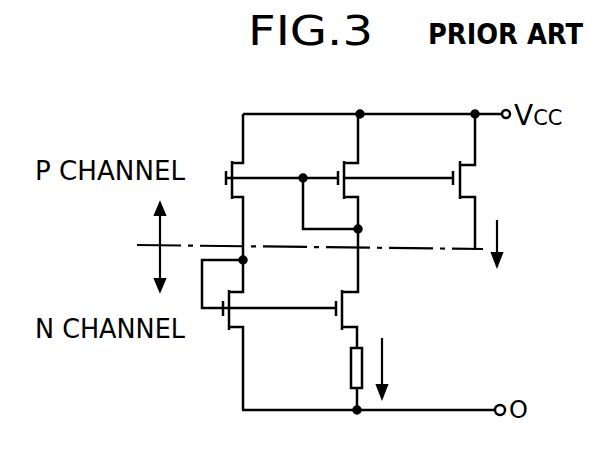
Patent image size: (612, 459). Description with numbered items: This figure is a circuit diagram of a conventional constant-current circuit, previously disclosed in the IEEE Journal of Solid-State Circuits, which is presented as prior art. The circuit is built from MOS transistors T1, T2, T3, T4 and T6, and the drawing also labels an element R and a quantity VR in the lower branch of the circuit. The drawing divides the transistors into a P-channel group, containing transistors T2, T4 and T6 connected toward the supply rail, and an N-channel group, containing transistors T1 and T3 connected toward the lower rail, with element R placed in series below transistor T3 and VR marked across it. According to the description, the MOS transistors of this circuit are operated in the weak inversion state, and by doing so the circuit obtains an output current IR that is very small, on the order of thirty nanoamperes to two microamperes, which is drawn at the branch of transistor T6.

The N-channel transistor T1 is at (240, 334).
The P-channel transistor T2 is at (282, 187).
The N-channel transistor T3 is at (307, 288).
The P-channel transistor T4 is at (378, 173).
The P-channel output transistor T6 is at (480, 181).
The resistor R is at (345, 379).
The output current IR is at (508, 243).
The reference voltage VR is at (398, 368).